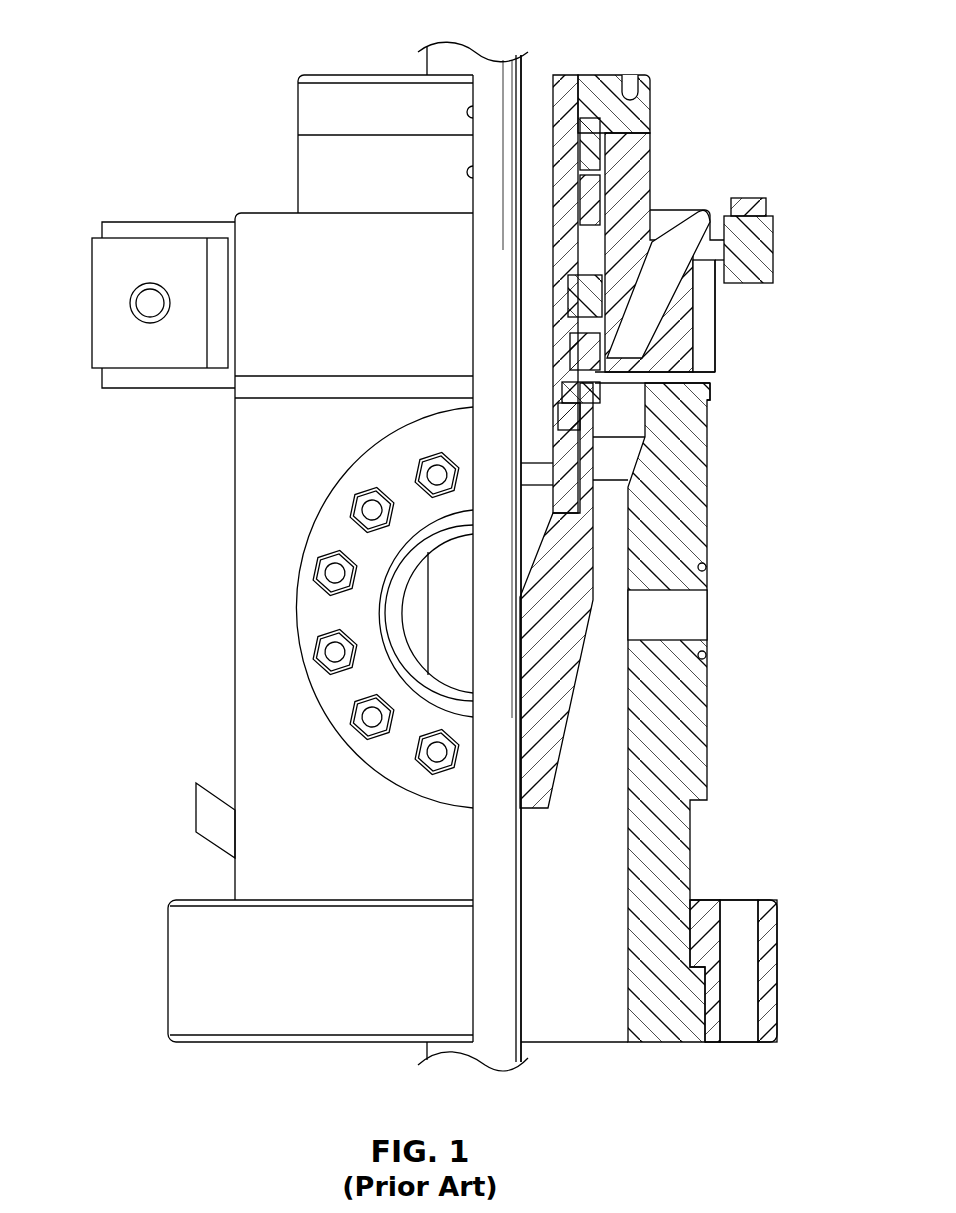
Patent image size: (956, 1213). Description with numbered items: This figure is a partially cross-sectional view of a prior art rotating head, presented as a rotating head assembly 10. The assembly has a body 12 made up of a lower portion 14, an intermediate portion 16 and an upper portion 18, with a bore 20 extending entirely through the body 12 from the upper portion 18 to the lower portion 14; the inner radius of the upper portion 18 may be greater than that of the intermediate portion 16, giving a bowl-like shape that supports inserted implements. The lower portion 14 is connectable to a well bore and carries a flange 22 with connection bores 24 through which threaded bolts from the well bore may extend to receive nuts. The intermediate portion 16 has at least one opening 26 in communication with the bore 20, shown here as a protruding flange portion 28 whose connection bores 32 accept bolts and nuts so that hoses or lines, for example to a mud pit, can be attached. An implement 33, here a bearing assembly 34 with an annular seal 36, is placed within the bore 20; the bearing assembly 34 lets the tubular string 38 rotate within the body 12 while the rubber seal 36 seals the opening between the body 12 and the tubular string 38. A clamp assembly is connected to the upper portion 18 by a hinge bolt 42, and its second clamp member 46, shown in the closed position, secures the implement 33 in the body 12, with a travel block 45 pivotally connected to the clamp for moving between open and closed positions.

The rotating head assembly 10 is at (168, 46).
The body 12 is at (235, 600).
The lower portion 14 is at (168, 968).
The intermediate portion 16 is at (235, 672).
The upper portion 18 is at (693, 302).
The bore 20 is at (630, 945).
The flange 22 is at (780, 962).
The connection bores 24 is at (748, 917).
The opening 26 is at (400, 634).
The flange portion 28 is at (313, 713).
The connection bores 32 is at (355, 503).
The implement 33 is at (297, 163).
The bearing assembly 34 is at (592, 391).
The annular seal 36 is at (597, 573).
The tubular string 38 is at (525, 917).
The hinge bolt 42 is at (747, 197).
The travel block 45 is at (92, 302).
The second clamp member 46 is at (675, 210).